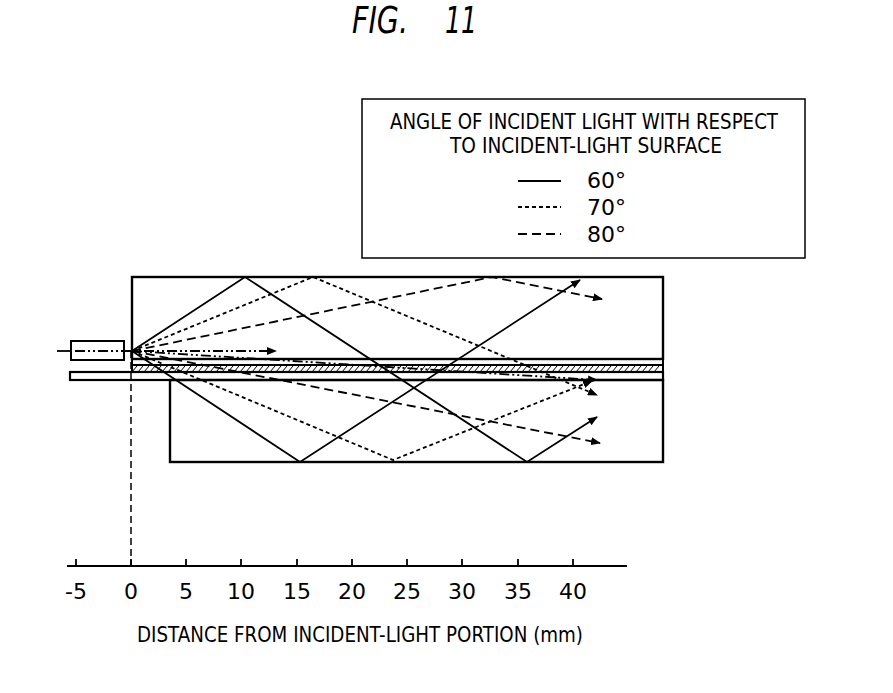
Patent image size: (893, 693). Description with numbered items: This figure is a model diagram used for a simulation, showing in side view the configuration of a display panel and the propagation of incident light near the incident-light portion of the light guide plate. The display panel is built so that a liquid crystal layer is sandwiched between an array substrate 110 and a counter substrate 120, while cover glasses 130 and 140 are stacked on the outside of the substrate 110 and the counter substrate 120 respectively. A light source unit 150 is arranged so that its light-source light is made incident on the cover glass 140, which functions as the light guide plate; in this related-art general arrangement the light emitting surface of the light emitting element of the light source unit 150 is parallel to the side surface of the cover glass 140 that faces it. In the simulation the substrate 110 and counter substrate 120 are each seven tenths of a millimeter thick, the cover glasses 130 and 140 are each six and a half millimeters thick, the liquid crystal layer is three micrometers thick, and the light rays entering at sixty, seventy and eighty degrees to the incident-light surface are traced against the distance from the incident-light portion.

The substrate 110 is at (663, 378).
The counter substrate 120 is at (663, 360).
The cover glass 130 is at (663, 432).
The cover glass 140 is at (663, 303).
The light source unit 150 is at (93, 341).